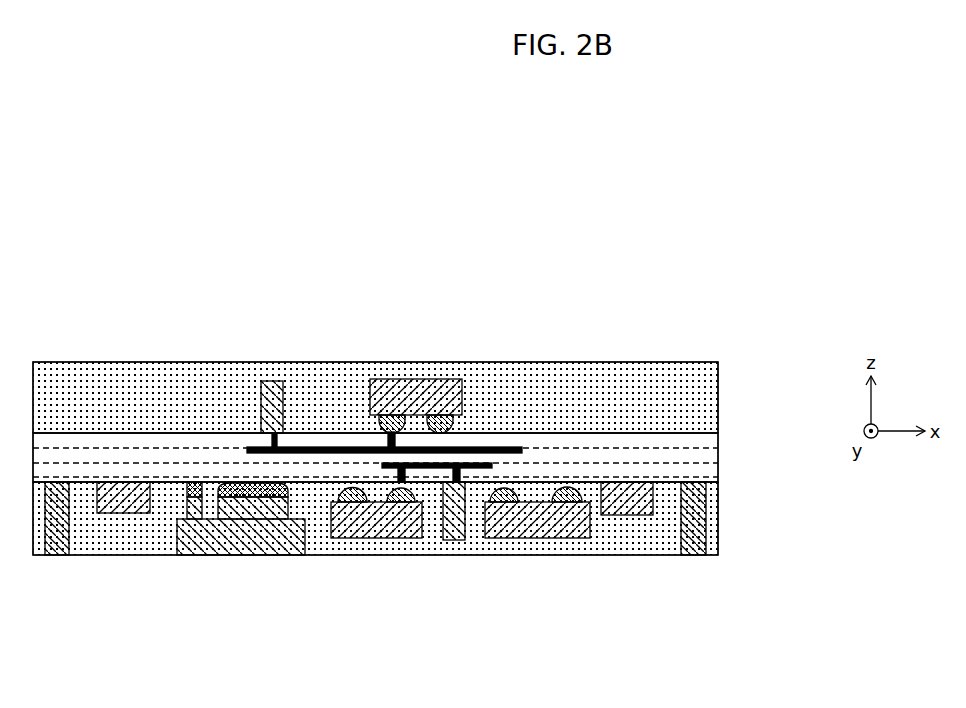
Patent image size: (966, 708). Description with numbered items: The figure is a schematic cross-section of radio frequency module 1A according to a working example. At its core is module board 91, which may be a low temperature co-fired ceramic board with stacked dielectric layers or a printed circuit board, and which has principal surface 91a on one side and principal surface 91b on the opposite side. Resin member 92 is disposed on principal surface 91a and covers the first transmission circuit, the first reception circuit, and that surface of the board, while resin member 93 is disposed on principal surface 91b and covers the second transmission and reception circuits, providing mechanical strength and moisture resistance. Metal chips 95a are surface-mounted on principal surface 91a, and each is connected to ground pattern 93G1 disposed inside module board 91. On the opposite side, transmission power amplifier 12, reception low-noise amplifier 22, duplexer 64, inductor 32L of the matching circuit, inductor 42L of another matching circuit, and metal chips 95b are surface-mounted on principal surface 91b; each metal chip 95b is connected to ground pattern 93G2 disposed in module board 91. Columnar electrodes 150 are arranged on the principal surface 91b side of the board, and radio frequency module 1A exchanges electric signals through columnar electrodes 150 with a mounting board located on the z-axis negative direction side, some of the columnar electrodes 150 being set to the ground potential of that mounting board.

The radio frequency module 1A is at (760, 326).
The resin member 92 is at (705, 388).
The principal surface 91a is at (708, 433).
The module board 91 is at (708, 456).
The principal surface 91b is at (713, 483).
The resin member 93 is at (708, 523).
The metal chip 95a is at (276, 381).
The ground pattern 93G1 is at (482, 447).
The ground pattern 93G2 is at (497, 461).
The columnar electrode 150 is at (57, 556).
The inductor 32L is at (132, 513).
The transmission power amplifier 12 is at (250, 556).
The duplexer 64 is at (383, 539).
The metal chip 95b is at (455, 541).
The reception low-noise amplifier 22 is at (537, 539).
The inductor 42L is at (622, 516).